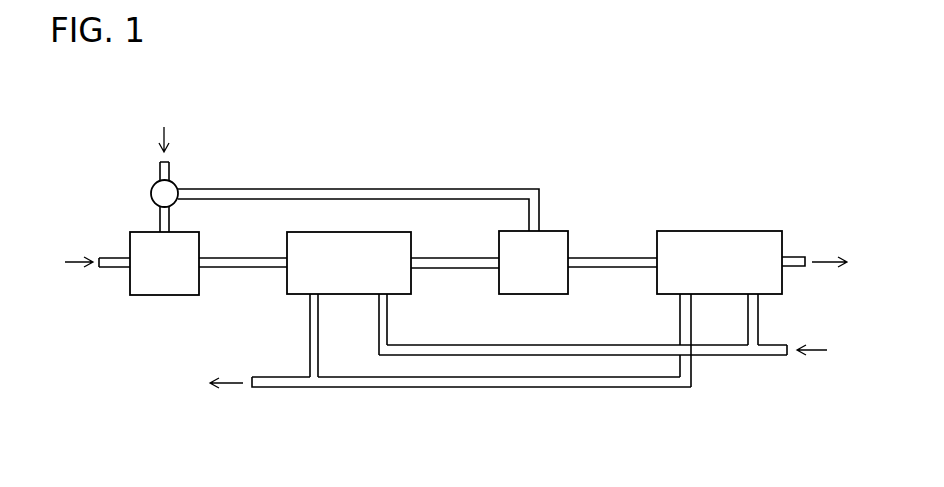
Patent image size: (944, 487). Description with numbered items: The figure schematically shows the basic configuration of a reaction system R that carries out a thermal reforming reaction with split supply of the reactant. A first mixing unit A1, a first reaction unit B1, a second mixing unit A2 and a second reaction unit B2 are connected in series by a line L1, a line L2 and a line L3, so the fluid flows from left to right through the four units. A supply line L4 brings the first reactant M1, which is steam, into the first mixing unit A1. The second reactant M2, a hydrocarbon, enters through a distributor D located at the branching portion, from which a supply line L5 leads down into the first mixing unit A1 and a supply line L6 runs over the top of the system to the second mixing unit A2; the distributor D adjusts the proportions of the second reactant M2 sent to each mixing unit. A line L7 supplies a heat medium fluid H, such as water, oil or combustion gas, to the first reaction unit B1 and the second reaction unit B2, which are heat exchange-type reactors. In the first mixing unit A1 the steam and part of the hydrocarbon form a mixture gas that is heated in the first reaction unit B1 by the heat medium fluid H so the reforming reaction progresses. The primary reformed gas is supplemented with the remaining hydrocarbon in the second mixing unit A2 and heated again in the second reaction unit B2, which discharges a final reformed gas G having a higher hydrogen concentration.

The reaction system R is at (604, 141).
The first mixing unit A1 is at (167, 297).
The first reaction unit B1 is at (285, 283).
The second mixing unit A2 is at (520, 295).
The second reaction unit B2 is at (700, 230).
The distributor D is at (174, 180).
The line L1 is at (213, 253).
The line L2 is at (428, 253).
The line L3 is at (588, 255).
The supply line L4 is at (117, 265).
The supply line L5 is at (158, 218).
The supply line L6 is at (388, 188).
The line L7 is at (759, 322).
The first reactant M1 is at (61, 262).
The second reactant M2 is at (165, 126).
The final reformed gas G is at (826, 263).
The heat medium fluid H is at (824, 349).